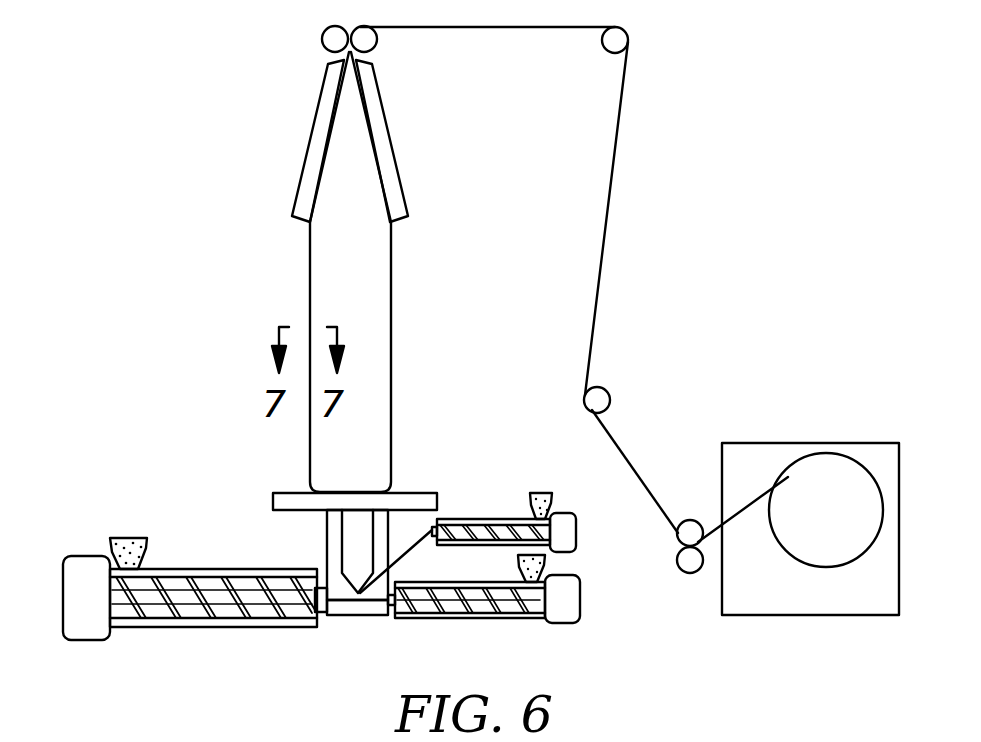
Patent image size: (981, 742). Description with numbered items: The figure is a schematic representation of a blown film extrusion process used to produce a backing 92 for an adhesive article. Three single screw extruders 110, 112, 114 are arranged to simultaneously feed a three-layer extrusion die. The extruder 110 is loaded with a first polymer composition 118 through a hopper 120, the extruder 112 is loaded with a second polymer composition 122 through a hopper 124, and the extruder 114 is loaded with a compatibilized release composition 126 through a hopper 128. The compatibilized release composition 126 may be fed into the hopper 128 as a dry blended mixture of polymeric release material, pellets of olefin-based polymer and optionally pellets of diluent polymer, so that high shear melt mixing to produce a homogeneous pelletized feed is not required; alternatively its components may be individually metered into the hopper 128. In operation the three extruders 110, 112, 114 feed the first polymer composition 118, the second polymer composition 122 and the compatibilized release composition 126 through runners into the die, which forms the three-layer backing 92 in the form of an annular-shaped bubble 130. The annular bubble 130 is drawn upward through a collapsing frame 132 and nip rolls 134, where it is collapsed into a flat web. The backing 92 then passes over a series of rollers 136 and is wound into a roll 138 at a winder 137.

The backing 92 is at (392, 295).
The single screw extruder 110 is at (597, 638).
The single screw extruder 112 is at (68, 531).
The single screw extruder 114 is at (570, 482).
The first polymer composition 118 is at (518, 556).
The hopper 120 is at (548, 563).
The second polymer composition 122 is at (128, 545).
The hopper 124 is at (148, 548).
The compatibilized release composition 126 is at (538, 491).
The hopper 128 is at (368, 612).
The annular-shaped bubble 130 is at (408, 382).
The collapsing frame 132 is at (306, 155).
The nip rolls 134 is at (322, 40).
The rollers 136 is at (628, 33).
The winder 137 is at (759, 428).
The roll 138 is at (851, 456).